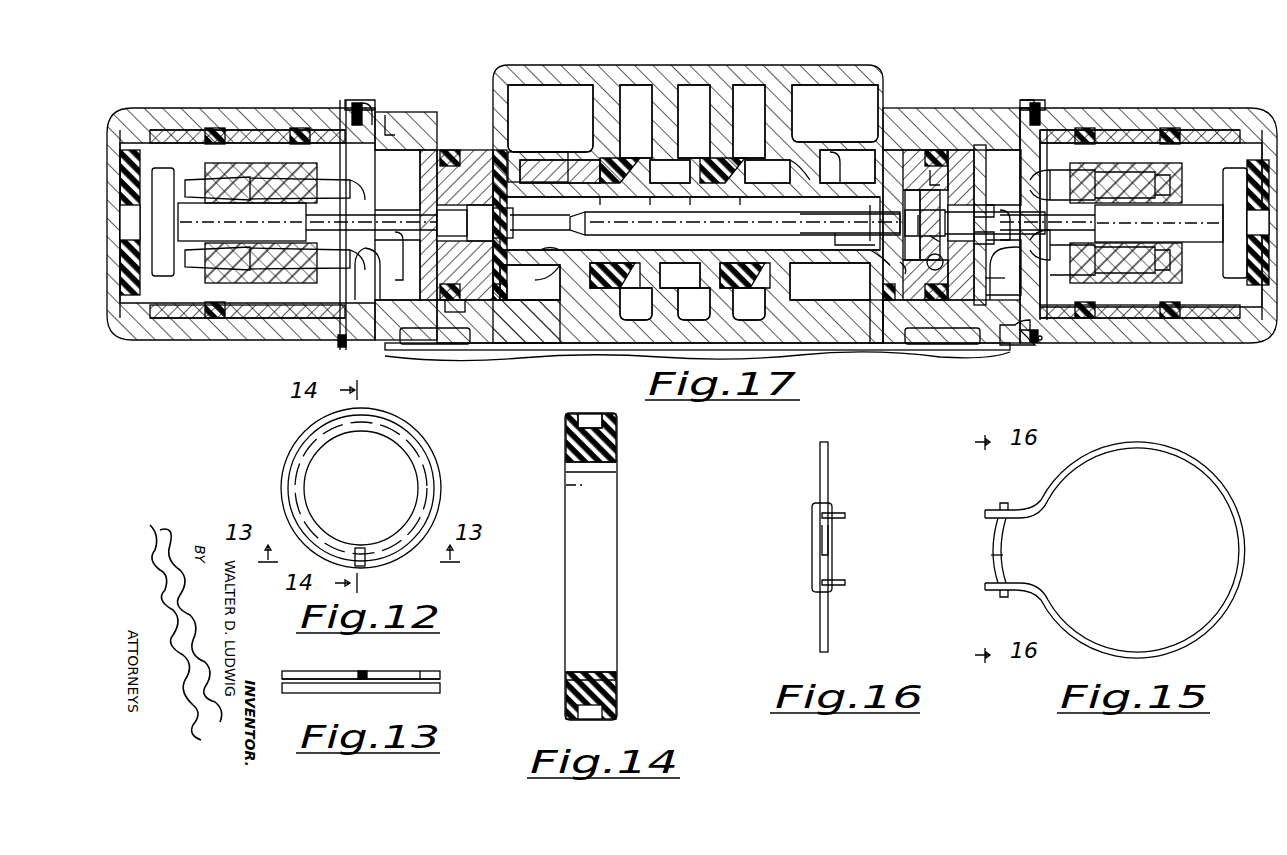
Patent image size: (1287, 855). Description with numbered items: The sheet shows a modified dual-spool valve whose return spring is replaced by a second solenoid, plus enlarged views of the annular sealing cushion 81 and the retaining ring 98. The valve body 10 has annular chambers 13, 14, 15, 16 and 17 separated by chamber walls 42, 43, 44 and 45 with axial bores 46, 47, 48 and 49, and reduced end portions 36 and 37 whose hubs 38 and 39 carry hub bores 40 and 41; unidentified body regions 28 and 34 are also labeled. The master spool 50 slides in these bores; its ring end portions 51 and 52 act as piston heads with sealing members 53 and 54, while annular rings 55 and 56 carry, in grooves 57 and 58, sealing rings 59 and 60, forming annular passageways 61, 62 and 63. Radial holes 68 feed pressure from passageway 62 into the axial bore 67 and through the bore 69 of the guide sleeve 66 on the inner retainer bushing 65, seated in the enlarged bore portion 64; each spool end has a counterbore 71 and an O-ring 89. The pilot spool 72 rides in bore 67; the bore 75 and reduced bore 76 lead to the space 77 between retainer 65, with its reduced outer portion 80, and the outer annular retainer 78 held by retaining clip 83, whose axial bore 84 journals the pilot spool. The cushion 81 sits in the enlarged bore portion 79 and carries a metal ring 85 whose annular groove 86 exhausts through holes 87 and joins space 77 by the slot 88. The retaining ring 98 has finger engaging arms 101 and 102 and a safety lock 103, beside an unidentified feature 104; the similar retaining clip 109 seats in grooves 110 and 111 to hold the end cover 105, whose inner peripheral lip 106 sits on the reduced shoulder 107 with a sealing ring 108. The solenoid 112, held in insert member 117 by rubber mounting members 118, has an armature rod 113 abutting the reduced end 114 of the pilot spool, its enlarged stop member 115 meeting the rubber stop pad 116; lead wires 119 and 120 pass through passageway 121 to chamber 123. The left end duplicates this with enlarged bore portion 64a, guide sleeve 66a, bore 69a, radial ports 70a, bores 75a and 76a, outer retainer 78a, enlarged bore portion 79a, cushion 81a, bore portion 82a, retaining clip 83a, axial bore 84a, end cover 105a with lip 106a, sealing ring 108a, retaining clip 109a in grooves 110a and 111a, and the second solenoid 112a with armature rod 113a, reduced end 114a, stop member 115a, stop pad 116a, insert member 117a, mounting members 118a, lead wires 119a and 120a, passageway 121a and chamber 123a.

In FIG. 17, the valve body 10 is at (802, 59).
In FIG. 17, the annular chamber 13 is at (548, 85).
In FIG. 17, the annular chamber 14 is at (636, 85).
In FIG. 17, the main pressure fluid supply chamber 15 is at (694, 85).
In FIG. 17, the annular chamber 16 is at (750, 85).
In FIG. 17, the annular chamber 17 is at (835, 85).
In FIG. 17, the lower body portion 28 is at (498, 321).
In FIG. 17, the body end portion 34 is at (859, 321).
In FIG. 17, the reduced circular end portion 36 is at (415, 112).
In FIG. 17, the reduced circular end portion 37 is at (960, 120).
In FIG. 17, the inwardly extended hub 38 is at (548, 152).
In FIG. 17, the inwardly extended hub 39 is at (860, 150).
In FIG. 17, the hub bore 40 is at (542, 282).
In FIG. 17, the hub bore 41 is at (921, 225).
In FIG. 17, the chamber wall 42 is at (636, 304).
In FIG. 17, the chamber wall 43 is at (694, 304).
In FIG. 17, the chamber wall 44 is at (749, 304).
In FIG. 17, the chamber wall 45 is at (830, 292).
In FIG. 17, the axial bore 46 is at (621, 165).
In FIG. 17, the axial bore 47 is at (673, 165).
In FIG. 17, the axial bore 48 is at (765, 164).
In FIG. 17, the axial bore 49 is at (802, 163).
In FIG. 17, the master spool 50 is at (715, 242).
In FIG. 17, the annular ring end portion 51 is at (560, 170).
In FIG. 17, the annular ring end portion 52 is at (918, 211).
In FIG. 17, the O-ring sealing member 53 is at (500, 160).
In FIG. 17, the O-ring sealing member 54 is at (833, 152).
In FIG. 17, the annular ring 55 is at (587, 168).
In FIG. 17, the annular ring 56 is at (732, 170).
In FIG. 17, the groove 57 is at (610, 197).
In FIG. 17, the groove 58 is at (729, 197).
In FIG. 17, the annular sealing ring 59 is at (616, 276).
In FIG. 17, the annular sealing ring 60 is at (680, 276).
In FIG. 17, the annular passageway 61 is at (547, 270).
In FIG. 17, the annular passageway 62 is at (650, 197).
In FIG. 17, the annular passageway 63 is at (742, 275).
In FIG. 17, the enlarged bore portion 64 is at (901, 283).
In FIG. 17, the inner retainer bushing 65 is at (933, 217).
In FIG. 17, the guide sleeve 66 is at (885, 258).
In FIG. 17, the axial bore 67 is at (800, 218).
In FIG. 17, the radial holes 68 is at (680, 197).
In FIG. 17, the bore 69 is at (855, 227).
In FIG. 17, the counterbore 71 is at (876, 223).
In FIG. 17, the pilot spool 72 is at (735, 223).
In FIG. 17, the bore 75 is at (975, 223).
In FIG. 17, the reduced bore 76 is at (973, 241).
In FIG. 17, the space 77 is at (973, 208).
In FIG. 17, the outer annular retainer 78 is at (986, 160).
In FIG. 17, the enlarged bore portion 79 is at (935, 150).
In FIG. 17, the reduced outer portion 80 is at (948, 195).
In FIG. 17, the annular sealing cushion 81 is at (922, 150).
In FIG. 12, the annular sealing cushion 81 is at (436, 445).
In FIG. 13, the annular sealing cushion 81 is at (439, 702).
In FIG. 14, the annular sealing cushion 81 is at (627, 693).
In FIG. 17, the retaining clip 83 is at (1002, 222).
In FIG. 17, the axial bore 84 is at (1010, 215).
In FIG. 12, the metal ring 85 is at (400, 433).
In FIG. 13, the metal ring 85 is at (422, 671).
In FIG. 14, the metal ring 85 is at (600, 712).
In FIG. 12, the annular groove 86 is at (440, 475).
In FIG. 13, the annular groove 86 is at (440, 676).
In FIG. 14, the annular groove 86 is at (580, 712).
In FIG. 17, the holes 87 is at (930, 242).
In FIG. 12, the slot 88 is at (360, 557).
In FIG. 13, the slot 88 is at (366, 671).
In FIG. 14, the slot 88 is at (580, 690).
In FIG. 17, the O-ring 89 is at (893, 270).
In FIG. 16, the retaining ring 98 is at (828, 620).
In FIG. 15, the retaining ring 98 is at (1178, 452).
In FIG. 16, the finger engaging arm 101 is at (840, 513).
In FIG. 15, the finger engaging arm 101 is at (988, 512).
In FIG. 16, the finger engaging arm 102 is at (848, 584).
In FIG. 15, the finger engaging arm 102 is at (988, 592).
In FIG. 16, the safety lock 103 is at (812, 570).
In FIG. 15, the safety lock 103 is at (992, 540).
In FIG. 16, the clamp slot 104 is at (830, 552).
In FIG. 15, the clamp slot 104 is at (991, 557).
In FIG. 17, the end cover 105 is at (1101, 102).
In FIG. 17, the inner peripheral lip 106 is at (1035, 100).
In FIG. 17, the reduced shoulder 107 is at (1023, 204).
In FIG. 17, the sealing ring 108 is at (1042, 110).
In FIG. 17, the retaining clip 109 is at (1035, 340).
In FIG. 17, the groove 110 is at (1035, 330).
In FIG. 17, the groove 111 is at (1017, 114).
In FIG. 17, the solenoid 112 is at (1145, 152).
In FIG. 17, the armature rod 113 is at (1159, 223).
In FIG. 17, the reduced end 114 is at (1100, 226).
In FIG. 17, the enlarged stop member 115 is at (1247, 216).
In FIG. 17, the rubber stop pad 116 is at (1231, 223).
In FIG. 17, the insert member 117 is at (1200, 130).
In FIG. 17, the rubber solenoid mounting members 118 is at (1139, 223).
In FIG. 17, the lead wire 119 is at (1097, 225).
In FIG. 17, the lead wire 120 is at (1012, 273).
In FIG. 17, the passageway 121 is at (1010, 287).
In FIG. 17, the chamber 123 is at (942, 336).
In FIG. 17, the enlarged bore portion 64a is at (504, 292).
In FIG. 17, the guide sleeve 66a is at (540, 220).
In FIG. 17, the bore 69a is at (565, 241).
In FIG. 17, the radial ports 70a is at (513, 223).
In FIG. 17, the bore 75a is at (470, 223).
In FIG. 17, the reduced bore 76a is at (443, 221).
In FIG. 17, the outer annular retainer 78a is at (432, 150).
In FIG. 17, the enlarged bore portion 79a is at (457, 313).
In FIG. 17, the annular sealing cushion 81a is at (480, 290).
In FIG. 17, the enlarged bore portion 82a is at (402, 122).
In FIG. 17, the retaining clip 83a is at (397, 225).
In FIG. 17, the axial bore 84a is at (412, 256).
In FIG. 17, the end cover 105a is at (299, 100).
In FIG. 17, the inner peripheral lip 106a is at (352, 104).
In FIG. 17, the sealing ring 108a is at (360, 96).
In FIG. 17, the retaining clip 109a is at (375, 115).
In FIG. 17, the groove 110a is at (366, 225).
In FIG. 17, the groove 111a is at (343, 345).
In FIG. 17, the second solenoid 112a is at (255, 149).
In FIG. 17, the armature rod 113a is at (242, 222).
In FIG. 17, the reduced end 114a is at (375, 216).
In FIG. 17, the enlarged stop member 115a is at (165, 276).
In FIG. 17, the rubber stop pad 116a is at (142, 220).
In FIG. 17, the insert member 117a is at (190, 130).
In FIG. 17, the rubber solenoid mounting members 118a is at (295, 144).
In FIG. 17, the lead wire 119a is at (290, 195).
In FIG. 17, the lead wire 120a is at (275, 273).
In FIG. 17, the passageway 121a is at (366, 274).
In FIG. 17, the chamber 123a is at (435, 336).